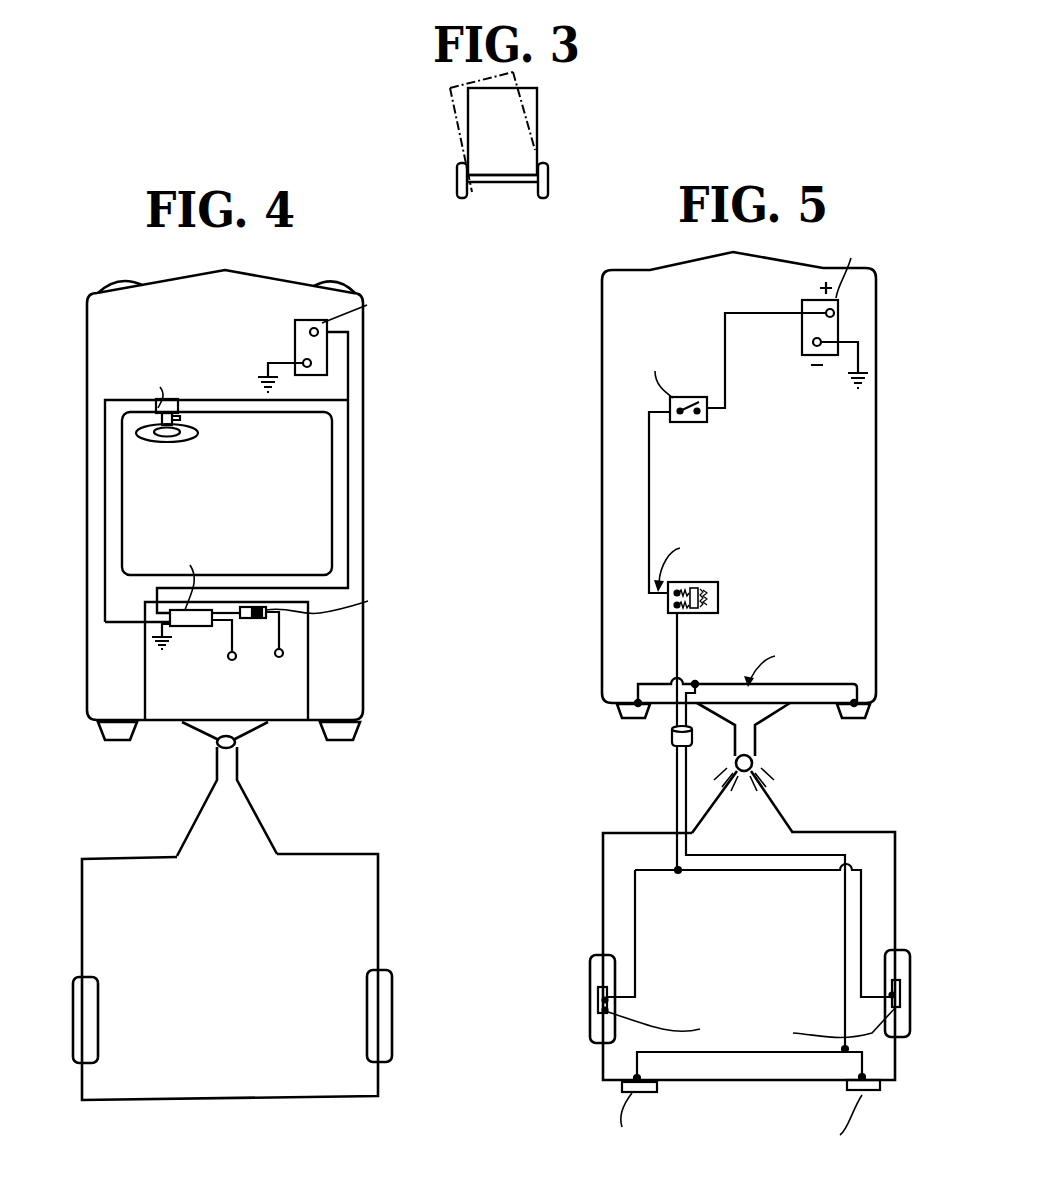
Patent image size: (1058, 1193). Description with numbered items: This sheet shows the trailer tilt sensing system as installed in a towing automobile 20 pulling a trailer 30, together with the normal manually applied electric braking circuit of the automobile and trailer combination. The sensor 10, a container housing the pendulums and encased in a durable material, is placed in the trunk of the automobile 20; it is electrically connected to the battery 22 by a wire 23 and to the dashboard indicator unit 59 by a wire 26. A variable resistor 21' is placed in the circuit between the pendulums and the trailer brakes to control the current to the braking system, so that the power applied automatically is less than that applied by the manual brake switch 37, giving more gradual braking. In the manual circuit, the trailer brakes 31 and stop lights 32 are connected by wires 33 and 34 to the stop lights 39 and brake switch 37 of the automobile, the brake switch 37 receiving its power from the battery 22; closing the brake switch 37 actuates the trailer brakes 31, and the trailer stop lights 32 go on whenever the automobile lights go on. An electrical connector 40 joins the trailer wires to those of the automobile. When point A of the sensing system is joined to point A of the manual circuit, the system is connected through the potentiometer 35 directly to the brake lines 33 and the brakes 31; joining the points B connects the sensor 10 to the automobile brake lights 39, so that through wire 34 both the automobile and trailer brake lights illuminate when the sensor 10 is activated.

In FIG. 4, the sensor container 10 is at (195, 628).
In FIG. 4, the automobile 20 is at (366, 358).
In FIG. 4, the variable resistor 21' is at (337, 599).
In FIG. 4, the battery 22 is at (311, 328).
In FIG. 5, the battery 22 is at (806, 355).
In FIG. 4, the wire 23 is at (350, 478).
In FIG. 4, the wire 26 is at (105, 530).
In FIG. 4, the trailer 30 is at (380, 905).
In FIG. 5, the trailer brakes 31 is at (607, 1003).
In FIG. 5, the stop lights 32 is at (660, 1092).
In FIG. 5, the wire 33 is at (637, 957).
In FIG. 5, the wire 34 is at (843, 958).
In FIG. 5, the potentiometer 35 is at (720, 594).
In FIG. 5, the brake switch 37 is at (693, 389).
In FIG. 5, the stop lights 39 is at (846, 712).
In FIG. 5, the electrical connector 40 is at (673, 742).
In FIG. 4, the dashboard indicator unit 59 is at (192, 422).